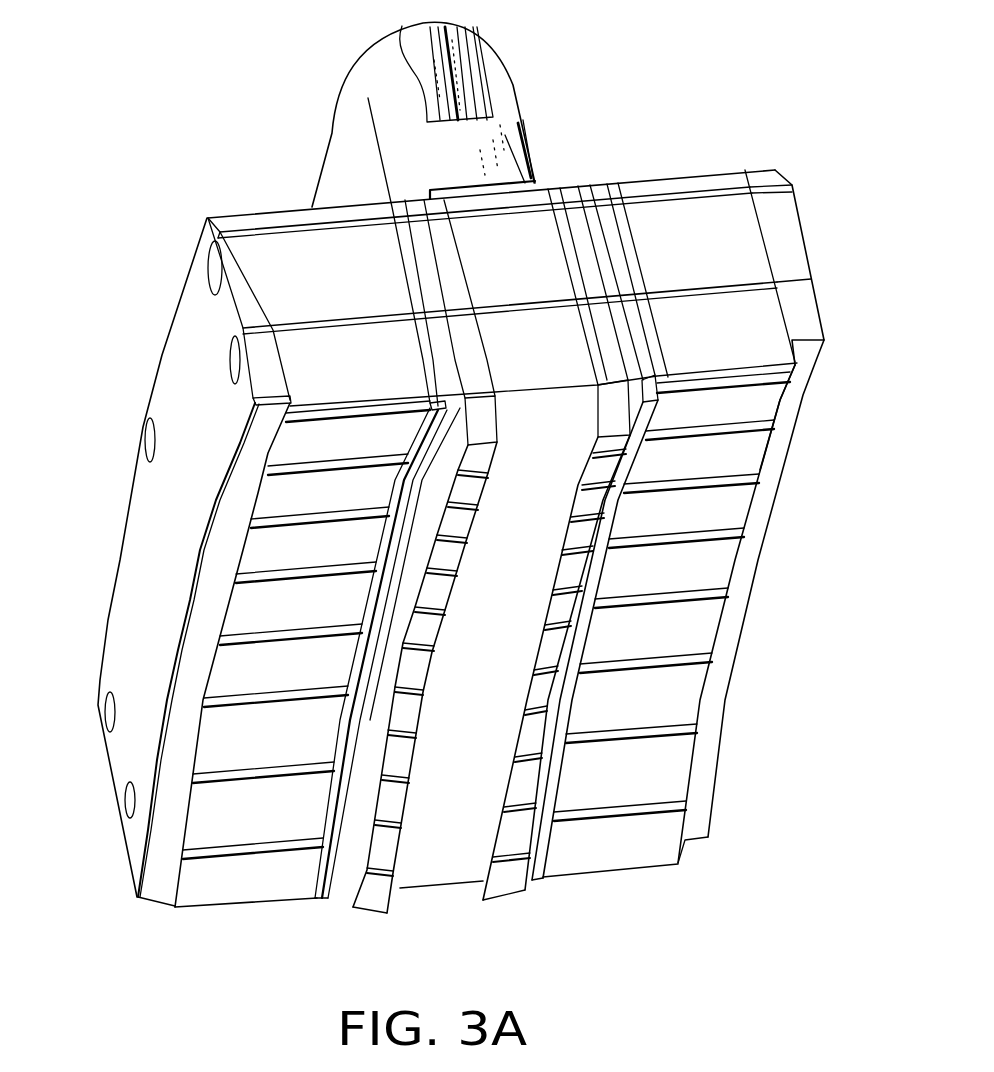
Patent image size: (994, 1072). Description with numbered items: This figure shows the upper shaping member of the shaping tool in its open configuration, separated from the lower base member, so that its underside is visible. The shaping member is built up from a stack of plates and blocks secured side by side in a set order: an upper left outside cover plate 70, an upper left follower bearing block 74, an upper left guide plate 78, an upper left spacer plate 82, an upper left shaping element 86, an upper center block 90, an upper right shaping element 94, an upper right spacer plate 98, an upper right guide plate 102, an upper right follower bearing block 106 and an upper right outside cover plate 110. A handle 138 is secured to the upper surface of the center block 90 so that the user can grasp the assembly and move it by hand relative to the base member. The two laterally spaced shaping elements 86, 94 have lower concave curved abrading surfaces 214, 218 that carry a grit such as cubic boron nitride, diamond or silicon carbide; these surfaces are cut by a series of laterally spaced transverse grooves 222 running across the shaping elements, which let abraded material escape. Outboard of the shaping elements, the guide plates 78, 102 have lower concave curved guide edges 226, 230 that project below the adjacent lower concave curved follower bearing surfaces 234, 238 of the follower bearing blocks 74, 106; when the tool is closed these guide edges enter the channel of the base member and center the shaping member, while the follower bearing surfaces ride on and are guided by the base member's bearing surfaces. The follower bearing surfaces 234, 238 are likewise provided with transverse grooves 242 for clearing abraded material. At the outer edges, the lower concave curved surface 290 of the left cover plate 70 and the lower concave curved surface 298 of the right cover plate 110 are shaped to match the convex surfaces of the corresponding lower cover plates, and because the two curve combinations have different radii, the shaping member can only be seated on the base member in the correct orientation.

The upper left outside cover plate 70 is at (175, 367).
The upper left follower bearing block 74 is at (298, 262).
The upper left guide plate 78 is at (390, 210).
The upper left spacer plate 82 is at (403, 210).
The upper left shaping element 86 is at (455, 258).
The upper center block 90 is at (473, 250).
The upper right shaping element 94 is at (550, 195).
The upper right spacer plate 98 is at (590, 195).
The upper right guide plate 102 is at (620, 195).
The upper right follower bearing block 106 is at (745, 255).
The upper right outside cover plate 110 is at (752, 518).
The handle 138 is at (497, 70).
The lower concave curved abrading surface 214 is at (383, 912).
The lower concave curved abrading surface 218 is at (513, 892).
The grooves 222 is at (417, 818).
The lower concave curved guide edge 226 is at (330, 905).
The lower concave curved guide edge 230 is at (527, 884).
The lower concave curved follower bearing surface 234 is at (255, 890).
The lower concave curved follower bearing surface 238 is at (637, 850).
The grooves 242 is at (173, 708).
The lower concave curved surface 290 is at (155, 890).
The lower concave curved surface 298 is at (790, 405).